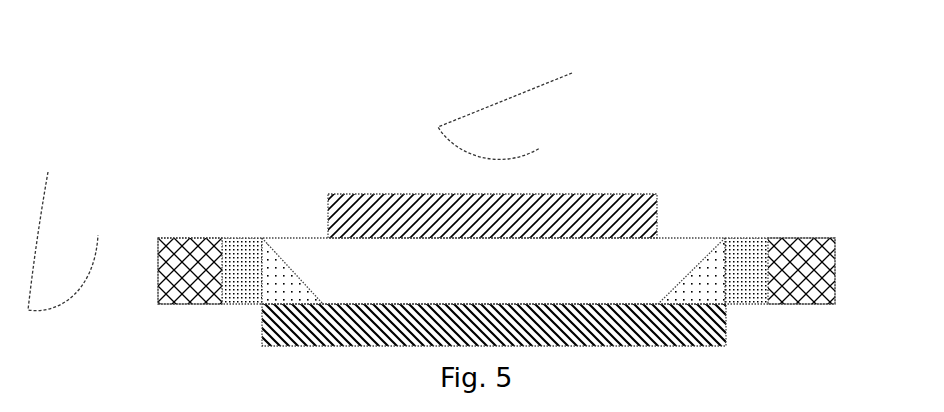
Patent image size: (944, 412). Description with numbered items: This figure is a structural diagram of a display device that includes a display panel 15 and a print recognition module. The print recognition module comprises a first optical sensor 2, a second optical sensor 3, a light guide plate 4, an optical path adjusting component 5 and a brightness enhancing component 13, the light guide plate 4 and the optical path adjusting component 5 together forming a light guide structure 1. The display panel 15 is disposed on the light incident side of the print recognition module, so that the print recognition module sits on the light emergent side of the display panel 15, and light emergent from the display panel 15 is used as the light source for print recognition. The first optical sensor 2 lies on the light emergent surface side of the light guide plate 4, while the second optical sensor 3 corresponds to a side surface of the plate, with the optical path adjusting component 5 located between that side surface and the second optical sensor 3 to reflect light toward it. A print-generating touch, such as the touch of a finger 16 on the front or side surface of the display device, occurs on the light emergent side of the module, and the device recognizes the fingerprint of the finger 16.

The light guide structure 1 is at (800, 271).
The first optical sensor 2 is at (657, 216).
The second optical sensor 3 is at (190, 285).
The light guide plate 4 is at (680, 258).
The optical path adjusting component 5 is at (707, 279).
The brightness enhancing component 13 is at (222, 254).
The display panel 15 is at (726, 324).
The finger 16 is at (523, 123).